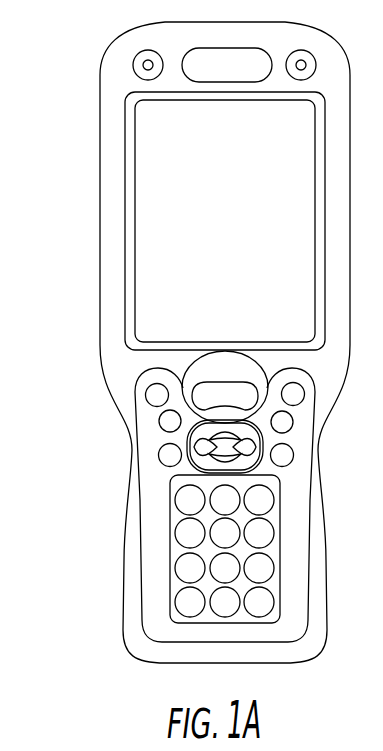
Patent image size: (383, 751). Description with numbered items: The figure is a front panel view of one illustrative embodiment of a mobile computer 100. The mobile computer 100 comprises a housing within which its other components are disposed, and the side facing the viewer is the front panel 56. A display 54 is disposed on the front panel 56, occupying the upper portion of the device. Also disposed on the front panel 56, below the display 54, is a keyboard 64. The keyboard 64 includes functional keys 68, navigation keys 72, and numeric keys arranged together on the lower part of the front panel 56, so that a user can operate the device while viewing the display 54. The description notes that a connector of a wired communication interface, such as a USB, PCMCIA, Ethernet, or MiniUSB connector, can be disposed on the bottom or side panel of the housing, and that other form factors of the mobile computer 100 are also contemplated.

The mobile computer 100 is at (122, 36).
The front panel 56 is at (115, 135).
The display 54 is at (165, 200).
The functional keys 68 is at (188, 379).
The navigation keys 72 is at (158, 453).
The keyboard 64 is at (140, 553).